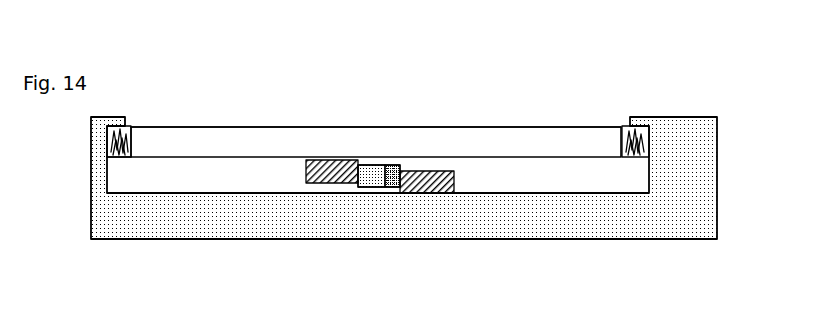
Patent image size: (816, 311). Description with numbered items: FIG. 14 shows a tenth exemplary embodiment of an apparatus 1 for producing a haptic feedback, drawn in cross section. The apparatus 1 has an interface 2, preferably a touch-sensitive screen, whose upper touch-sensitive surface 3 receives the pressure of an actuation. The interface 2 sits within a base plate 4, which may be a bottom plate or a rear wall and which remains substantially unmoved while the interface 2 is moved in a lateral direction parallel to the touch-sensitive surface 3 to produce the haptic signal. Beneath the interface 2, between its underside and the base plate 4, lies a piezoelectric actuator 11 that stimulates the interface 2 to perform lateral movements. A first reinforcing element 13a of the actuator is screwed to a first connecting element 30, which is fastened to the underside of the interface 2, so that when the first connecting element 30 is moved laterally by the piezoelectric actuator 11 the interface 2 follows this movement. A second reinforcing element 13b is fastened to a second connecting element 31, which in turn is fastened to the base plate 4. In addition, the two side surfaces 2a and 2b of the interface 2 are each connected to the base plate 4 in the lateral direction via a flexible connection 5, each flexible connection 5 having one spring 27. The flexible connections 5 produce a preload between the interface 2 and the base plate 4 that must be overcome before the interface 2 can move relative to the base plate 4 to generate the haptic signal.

The apparatus 1 is at (367, 87).
The interface 2 is at (532, 145).
The side surface 2a is at (622, 158).
The side surface 2b is at (127, 155).
The touch-sensitive surface 3 is at (437, 127).
The base plate 4 is at (631, 210).
The flexible connection 5 is at (132, 126).
The piezoelectric actuator 11 is at (382, 178).
The first reinforcing element 13a is at (364, 183).
The second reinforcing element 13b is at (400, 180).
The spring 27 is at (125, 133).
The first connecting element 30 is at (306, 170).
The second connecting element 31 is at (411, 189).